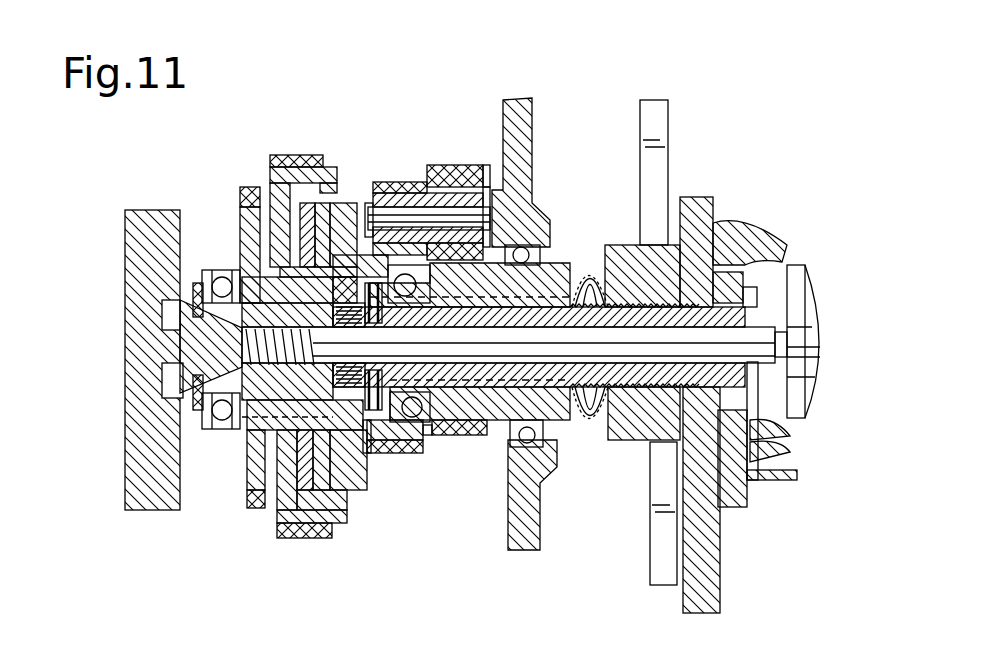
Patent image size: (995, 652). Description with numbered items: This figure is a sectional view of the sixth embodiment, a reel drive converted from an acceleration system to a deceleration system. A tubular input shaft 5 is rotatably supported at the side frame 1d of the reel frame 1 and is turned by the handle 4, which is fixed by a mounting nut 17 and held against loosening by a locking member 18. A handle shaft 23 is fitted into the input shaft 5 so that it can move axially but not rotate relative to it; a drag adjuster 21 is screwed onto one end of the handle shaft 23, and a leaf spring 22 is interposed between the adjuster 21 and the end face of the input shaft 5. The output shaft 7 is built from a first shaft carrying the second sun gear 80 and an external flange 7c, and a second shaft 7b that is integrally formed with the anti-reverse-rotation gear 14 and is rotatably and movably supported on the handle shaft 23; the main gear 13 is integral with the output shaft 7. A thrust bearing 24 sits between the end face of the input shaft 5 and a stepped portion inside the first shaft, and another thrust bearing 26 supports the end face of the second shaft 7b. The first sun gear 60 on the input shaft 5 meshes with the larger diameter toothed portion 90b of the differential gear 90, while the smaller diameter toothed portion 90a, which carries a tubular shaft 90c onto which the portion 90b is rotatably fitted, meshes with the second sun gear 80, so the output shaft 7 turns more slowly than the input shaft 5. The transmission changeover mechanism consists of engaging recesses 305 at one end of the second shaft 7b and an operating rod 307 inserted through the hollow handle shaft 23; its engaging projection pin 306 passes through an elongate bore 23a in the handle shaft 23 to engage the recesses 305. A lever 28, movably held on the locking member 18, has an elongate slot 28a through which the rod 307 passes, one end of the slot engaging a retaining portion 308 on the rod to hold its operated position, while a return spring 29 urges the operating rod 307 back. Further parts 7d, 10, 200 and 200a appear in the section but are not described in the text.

The housing 1 is at (522, 97).
The housing wall 1d is at (130, 232).
The handle 4 is at (703, 588).
The input shaft 5 is at (552, 275).
The output shaft 7 is at (258, 453).
The second shaft 7b is at (287, 402).
The external flange 7c is at (362, 458).
The rotor frame plate 7d is at (383, 455).
The motor shaft 10 is at (465, 212).
The main gear 13 is at (280, 155).
The anti-reverse-rotation gear 14 is at (250, 188).
The mounting nut 17 is at (747, 280).
The locking member 18 is at (740, 495).
The drag adjuster 21 is at (660, 247).
The leaf spring 22 is at (587, 263).
The handle shaft 23 is at (635, 373).
The elongate bore 23a is at (372, 455).
The thrust bearing 24 is at (398, 437).
The thrust bearing 26 is at (210, 270).
The lever 28 is at (752, 447).
The elongate slot 28a is at (757, 365).
The return spring 29 is at (207, 402).
The first sun gear 60 is at (466, 436).
The second sun gear 80 is at (392, 455).
The differential gear 90 is at (388, 178).
The smaller diameter toothed portion 90a is at (378, 190).
The larger diameter toothed portion 90b is at (390, 180).
The tubular shaft 90c is at (440, 182).
The coil 200 is at (440, 185).
The coil end portion 200a is at (452, 183).
The engaging recesses 305 is at (368, 455).
The engaging projection pin 306 is at (378, 457).
The operating rod 307 is at (765, 343).
The retaining portion 308 is at (783, 327).